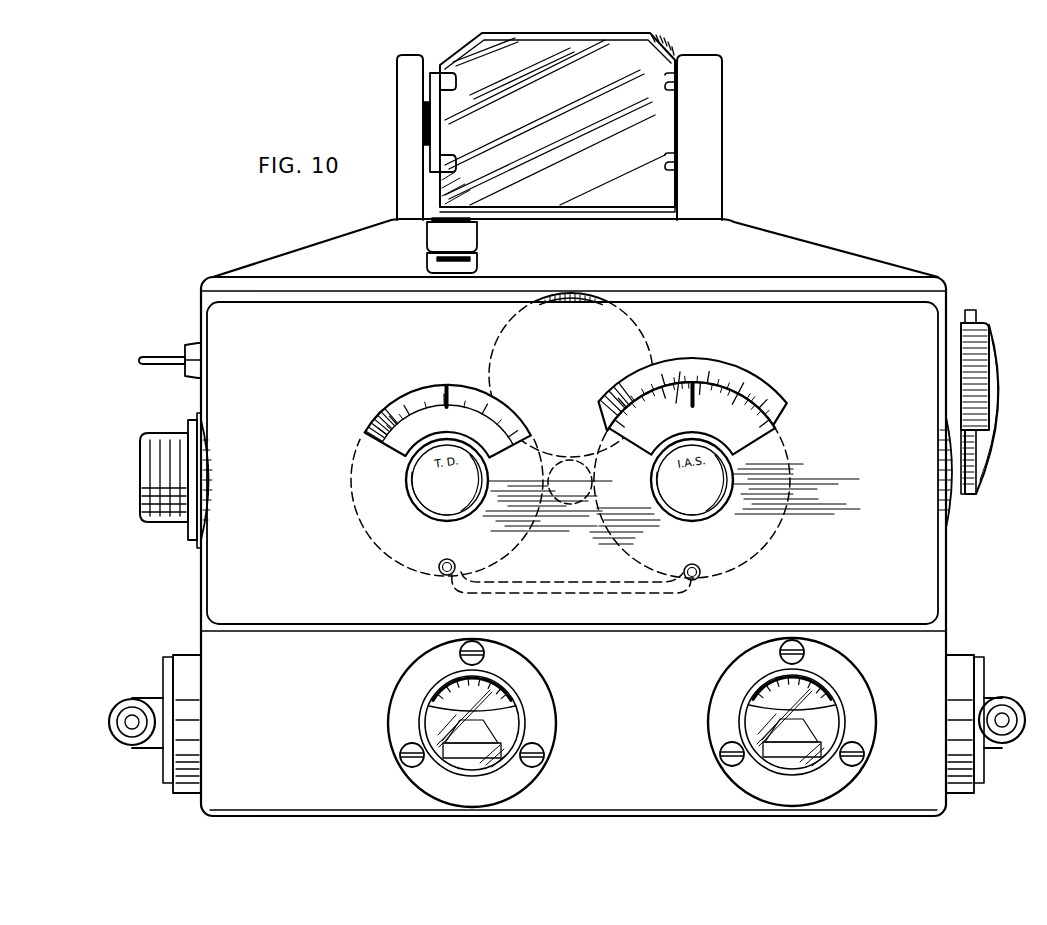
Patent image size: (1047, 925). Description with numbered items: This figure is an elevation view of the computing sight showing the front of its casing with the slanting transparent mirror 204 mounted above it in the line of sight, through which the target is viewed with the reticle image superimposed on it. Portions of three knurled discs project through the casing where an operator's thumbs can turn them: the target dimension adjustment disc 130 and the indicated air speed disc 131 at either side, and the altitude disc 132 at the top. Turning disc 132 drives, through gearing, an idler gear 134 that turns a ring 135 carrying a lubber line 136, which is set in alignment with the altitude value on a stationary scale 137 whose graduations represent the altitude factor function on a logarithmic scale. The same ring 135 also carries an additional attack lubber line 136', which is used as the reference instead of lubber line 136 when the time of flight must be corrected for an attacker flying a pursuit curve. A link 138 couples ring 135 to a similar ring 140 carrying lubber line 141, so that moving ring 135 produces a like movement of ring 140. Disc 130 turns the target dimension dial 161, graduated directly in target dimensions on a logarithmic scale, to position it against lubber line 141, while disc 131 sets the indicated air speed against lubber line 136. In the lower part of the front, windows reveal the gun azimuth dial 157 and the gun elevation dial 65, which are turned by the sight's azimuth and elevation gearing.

The slanting transparent mirror 204 is at (673, 54).
The target dimension adjustment disc 130 is at (206, 441).
The indicated air speed disc 131 is at (937, 444).
The altitude disc 132 is at (608, 297).
The idler gear 134 is at (580, 460).
The ring 140 is at (430, 395).
The lubber line 141 is at (446, 392).
The target dimension dial 161 is at (385, 432).
The ring 135 is at (744, 406).
The stationary scale 137 is at (772, 412).
The lubber line 136 is at (732, 374).
The attack lubber line 136' is at (670, 366).
The link 138 is at (600, 583).
The gun azimuth dial 157 is at (504, 699).
The gun elevation dial 65 is at (823, 703).